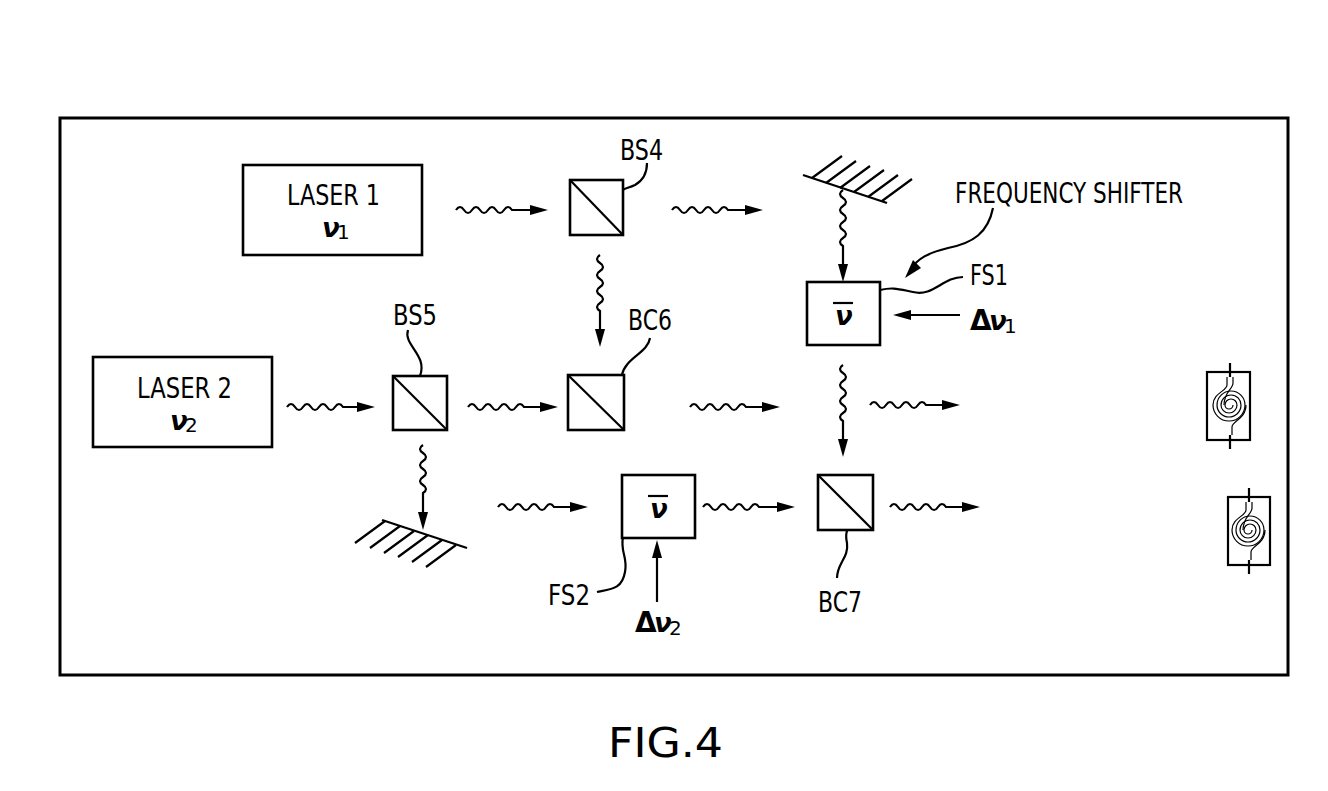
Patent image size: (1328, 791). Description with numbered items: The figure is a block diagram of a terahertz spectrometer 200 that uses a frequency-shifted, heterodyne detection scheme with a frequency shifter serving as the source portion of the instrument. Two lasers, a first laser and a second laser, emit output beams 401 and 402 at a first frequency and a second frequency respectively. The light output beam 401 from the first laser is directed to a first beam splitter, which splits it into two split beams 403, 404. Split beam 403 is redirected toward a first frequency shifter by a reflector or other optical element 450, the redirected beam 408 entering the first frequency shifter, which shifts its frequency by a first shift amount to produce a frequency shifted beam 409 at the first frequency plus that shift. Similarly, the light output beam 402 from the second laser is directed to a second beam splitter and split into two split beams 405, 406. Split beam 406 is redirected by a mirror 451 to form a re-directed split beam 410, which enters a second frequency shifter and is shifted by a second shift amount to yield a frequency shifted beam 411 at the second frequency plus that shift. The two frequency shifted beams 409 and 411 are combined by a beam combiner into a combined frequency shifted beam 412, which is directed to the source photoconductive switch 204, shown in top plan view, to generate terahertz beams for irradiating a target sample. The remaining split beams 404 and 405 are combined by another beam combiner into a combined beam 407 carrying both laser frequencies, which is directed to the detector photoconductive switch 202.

The optical source system 200 is at (955, 118).
The detector polarization control system PCS2 202 is at (1250, 383).
The detector PCS1 204 is at (1228, 560).
The light output beam from Laser 1 401 is at (496, 210).
The light output beam from Laser 2 402 is at (330, 402).
The split beam 403 is at (716, 210).
The split beam 404 is at (597, 282).
The split beam 405 is at (510, 403).
The split beam 406 is at (425, 464).
The combined beam 407 is at (722, 410).
The beam 408 is at (837, 225).
The frequency shifted beam 409 is at (847, 390).
The re-directed split beam 410 is at (528, 512).
The frequency shifted beam 411 is at (737, 510).
The combined frequency shifted beam 412 is at (920, 510).
The reflector or other optical element 450 is at (893, 180).
The mirror 451 is at (392, 546).